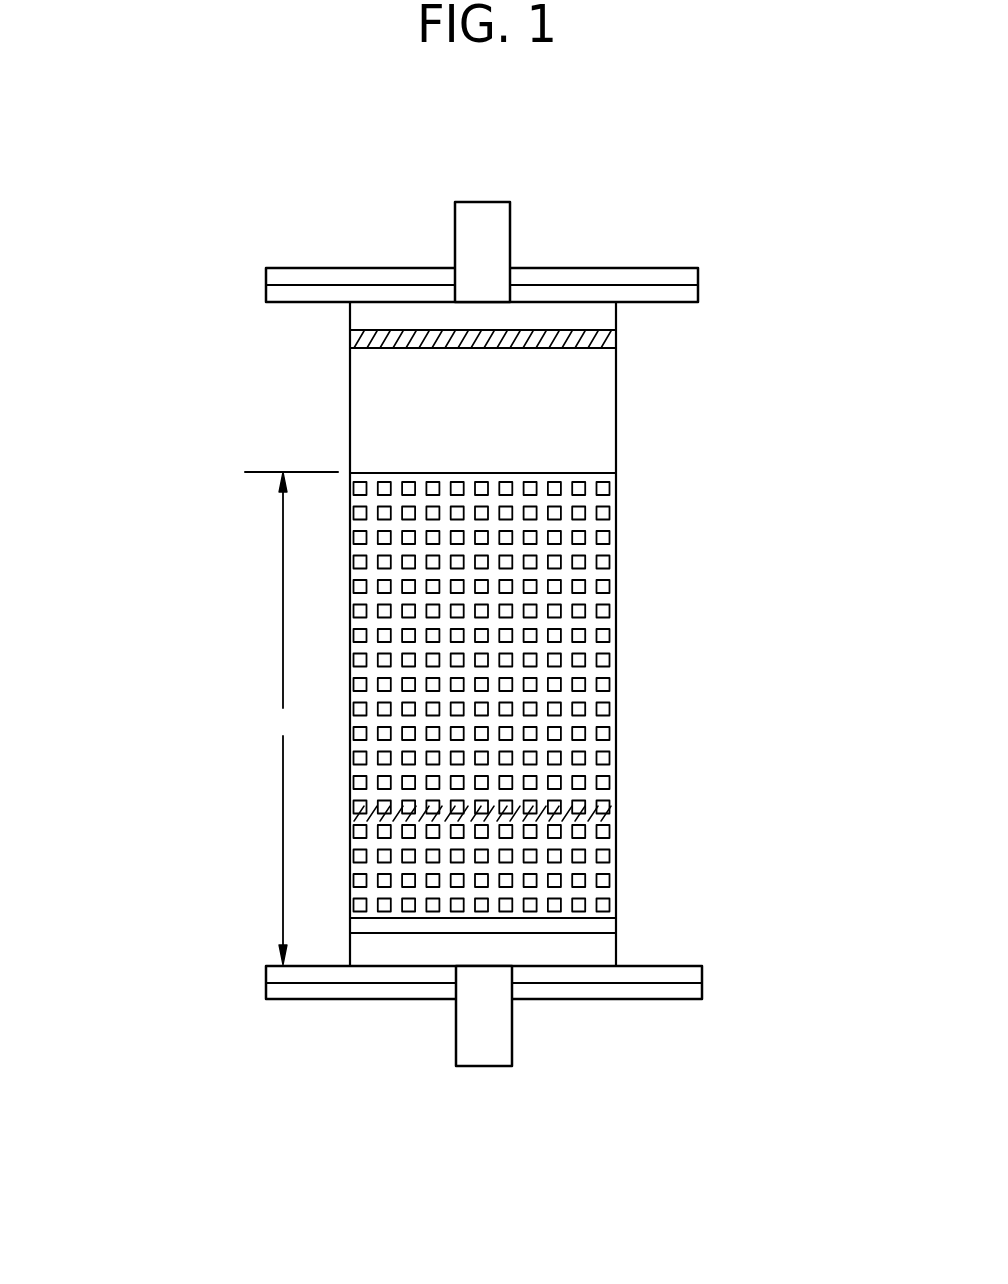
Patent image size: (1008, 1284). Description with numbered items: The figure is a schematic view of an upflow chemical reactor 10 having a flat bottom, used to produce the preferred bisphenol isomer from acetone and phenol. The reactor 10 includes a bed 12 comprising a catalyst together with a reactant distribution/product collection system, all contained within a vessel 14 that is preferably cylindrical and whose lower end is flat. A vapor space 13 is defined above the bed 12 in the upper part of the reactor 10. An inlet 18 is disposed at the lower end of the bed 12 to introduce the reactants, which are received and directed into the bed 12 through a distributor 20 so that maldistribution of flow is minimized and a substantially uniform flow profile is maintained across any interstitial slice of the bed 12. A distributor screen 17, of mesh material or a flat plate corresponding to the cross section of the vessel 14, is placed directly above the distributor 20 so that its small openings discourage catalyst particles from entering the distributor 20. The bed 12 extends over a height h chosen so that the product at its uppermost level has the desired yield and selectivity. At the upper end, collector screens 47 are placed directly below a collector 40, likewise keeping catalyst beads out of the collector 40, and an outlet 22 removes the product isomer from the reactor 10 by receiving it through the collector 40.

The reactor 10 is at (176, 313).
The bed 12 is at (595, 678).
The vapor space 13 is at (396, 408).
The vessel 14 is at (617, 426).
The screen 17 is at (473, 922).
The inlet 18 is at (486, 1067).
The distributor 20 is at (602, 947).
The outlet 22 is at (483, 201).
The collector 40 is at (583, 300).
The collector screens 47 is at (592, 346).